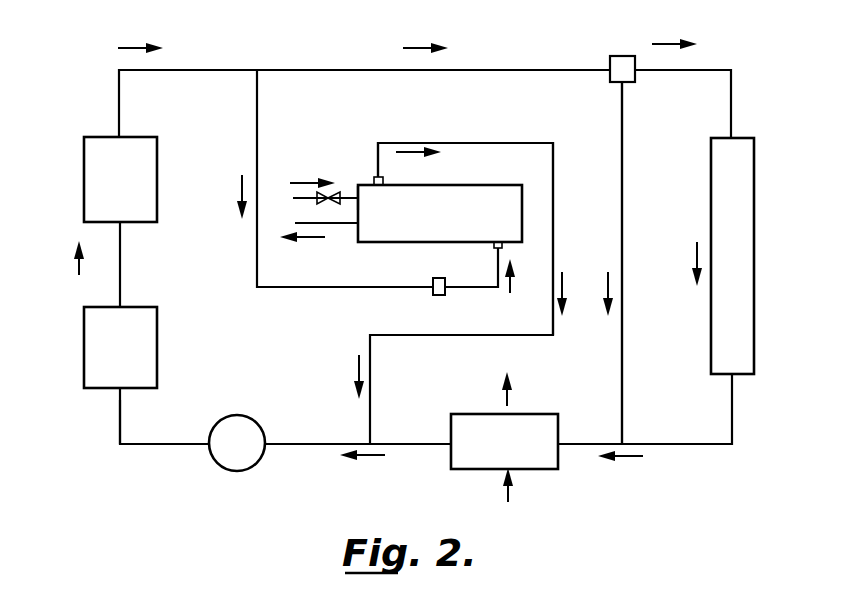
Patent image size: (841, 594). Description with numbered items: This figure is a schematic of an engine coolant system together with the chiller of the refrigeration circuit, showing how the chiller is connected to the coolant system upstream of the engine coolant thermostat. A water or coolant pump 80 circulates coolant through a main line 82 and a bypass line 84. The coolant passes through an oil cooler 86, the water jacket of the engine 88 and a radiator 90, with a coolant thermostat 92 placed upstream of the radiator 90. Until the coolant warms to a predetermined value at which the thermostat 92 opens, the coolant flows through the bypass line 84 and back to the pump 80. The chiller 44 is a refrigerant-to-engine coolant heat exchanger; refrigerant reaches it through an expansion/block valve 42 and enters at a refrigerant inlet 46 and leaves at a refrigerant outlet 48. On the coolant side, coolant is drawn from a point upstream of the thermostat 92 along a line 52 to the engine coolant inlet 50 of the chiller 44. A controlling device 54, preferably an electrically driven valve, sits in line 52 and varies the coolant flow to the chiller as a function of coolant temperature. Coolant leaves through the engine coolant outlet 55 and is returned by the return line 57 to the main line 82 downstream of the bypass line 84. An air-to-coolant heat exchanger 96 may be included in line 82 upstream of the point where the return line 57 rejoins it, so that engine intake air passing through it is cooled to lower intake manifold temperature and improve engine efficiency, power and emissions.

The expansion/block valve 42 is at (316, 199).
The chiller 44 is at (505, 194).
The refrigerant inlet 46 is at (358, 198).
The refrigerant outlet 48 is at (356, 225).
The engine coolant inlet 50 is at (496, 248).
The line 52 is at (470, 289).
The controlling device 54 is at (434, 280).
The engine coolant outlet 55 is at (386, 182).
The line 57 is at (468, 130).
The coolant pump 80 is at (237, 426).
The main line 82 is at (122, 421).
The bypass line 84 is at (623, 163).
The oil cooler 86 is at (104, 341).
The engine 88 is at (97, 165).
The radiator 90 is at (742, 166).
The coolant thermostat 92 is at (620, 56).
The air-to-coolant heat exchanger 96 is at (470, 425).